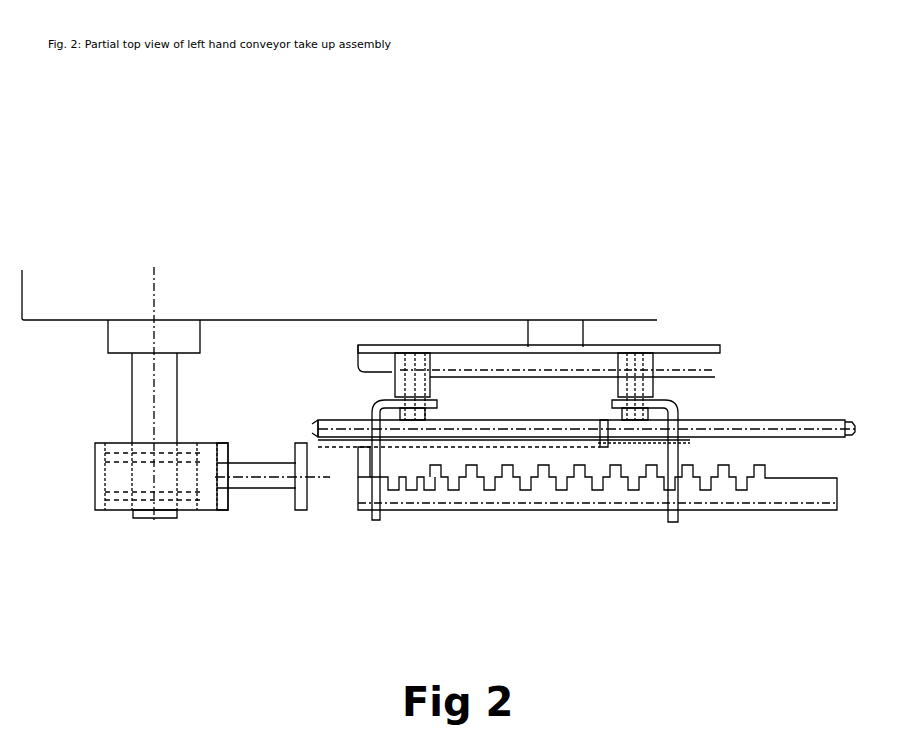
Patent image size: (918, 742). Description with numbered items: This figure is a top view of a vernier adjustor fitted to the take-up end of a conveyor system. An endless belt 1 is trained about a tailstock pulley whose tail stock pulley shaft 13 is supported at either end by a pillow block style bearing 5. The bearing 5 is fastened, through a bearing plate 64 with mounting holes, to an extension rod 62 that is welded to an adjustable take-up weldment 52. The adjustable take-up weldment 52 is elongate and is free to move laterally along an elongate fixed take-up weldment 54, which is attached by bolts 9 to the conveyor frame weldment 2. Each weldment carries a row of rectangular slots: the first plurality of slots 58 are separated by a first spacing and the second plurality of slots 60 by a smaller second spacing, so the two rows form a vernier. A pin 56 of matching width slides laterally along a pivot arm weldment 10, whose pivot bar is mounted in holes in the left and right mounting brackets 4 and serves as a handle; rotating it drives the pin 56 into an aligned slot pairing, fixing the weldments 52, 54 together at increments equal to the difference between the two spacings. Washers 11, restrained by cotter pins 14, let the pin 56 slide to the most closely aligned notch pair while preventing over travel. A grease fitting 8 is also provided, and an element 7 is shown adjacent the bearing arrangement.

The endless belt 1 is at (303, 318).
The conveyor frame weldment 2 is at (707, 343).
The mounting bracket 4 is at (680, 405).
The pillow block style bearing 5 is at (204, 512).
The support block 7 is at (307, 522).
The grease fitting 8 is at (95, 483).
The bolts for attaching the fixed take up weldment 9 is at (641, 428).
The pivot arm weldment 10 is at (564, 408).
The washers 11 is at (316, 425).
The tail stock pulley shaft 13 is at (145, 522).
The cotter pins 14 is at (320, 426).
The adjustable take-up weldment 52 is at (430, 495).
The fixed take-up weldment 54 is at (451, 450).
The pin 56 is at (603, 472).
The first plurality of slots 58 is at (490, 490).
The second plurality of slots 60 is at (503, 467).
The extension rod 62 is at (251, 480).
The bearing plate 64 is at (223, 452).